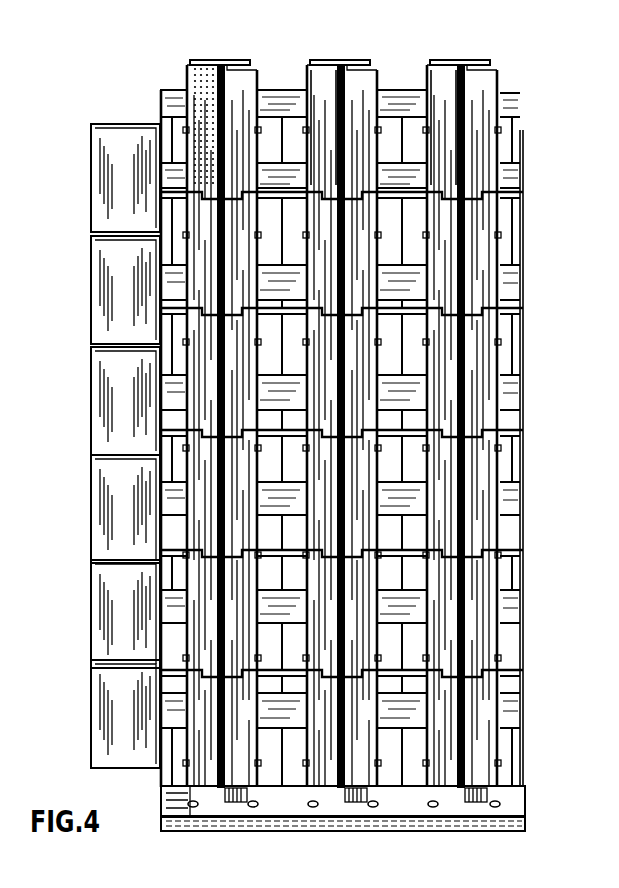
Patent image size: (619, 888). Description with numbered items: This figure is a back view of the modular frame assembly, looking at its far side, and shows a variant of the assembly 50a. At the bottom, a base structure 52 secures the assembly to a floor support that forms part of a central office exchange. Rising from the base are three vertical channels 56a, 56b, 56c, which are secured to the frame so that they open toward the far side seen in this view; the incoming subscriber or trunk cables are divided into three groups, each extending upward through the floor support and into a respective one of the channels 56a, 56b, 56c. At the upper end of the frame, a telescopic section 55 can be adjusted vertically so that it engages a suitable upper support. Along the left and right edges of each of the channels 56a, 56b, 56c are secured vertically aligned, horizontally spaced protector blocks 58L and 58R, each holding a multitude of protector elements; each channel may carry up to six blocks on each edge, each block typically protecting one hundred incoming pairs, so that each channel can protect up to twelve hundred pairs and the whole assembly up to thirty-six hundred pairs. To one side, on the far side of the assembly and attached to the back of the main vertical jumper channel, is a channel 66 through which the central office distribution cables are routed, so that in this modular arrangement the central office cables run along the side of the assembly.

The panel assembly 50a is at (515, 398).
The base structure 52 is at (510, 800).
The telescopic section 55 is at (203, 62).
The vertical channel 56a is at (462, 123).
The vertical channel 56b is at (345, 135).
The vertical channel 56c is at (227, 112).
The protector blocks 58L is at (322, 87).
The protector blocks 58R is at (480, 230).
The channel 66 is at (115, 407).